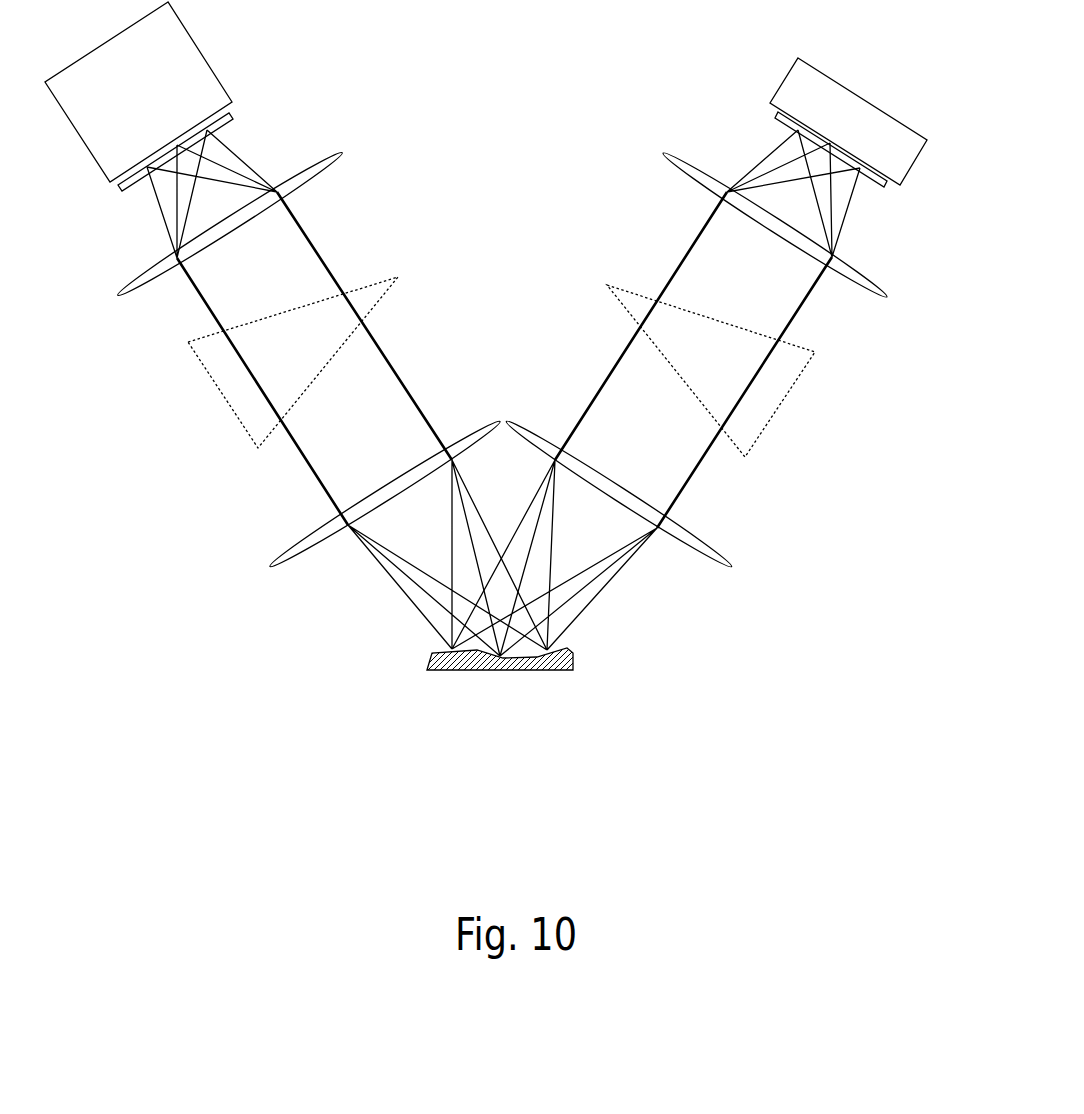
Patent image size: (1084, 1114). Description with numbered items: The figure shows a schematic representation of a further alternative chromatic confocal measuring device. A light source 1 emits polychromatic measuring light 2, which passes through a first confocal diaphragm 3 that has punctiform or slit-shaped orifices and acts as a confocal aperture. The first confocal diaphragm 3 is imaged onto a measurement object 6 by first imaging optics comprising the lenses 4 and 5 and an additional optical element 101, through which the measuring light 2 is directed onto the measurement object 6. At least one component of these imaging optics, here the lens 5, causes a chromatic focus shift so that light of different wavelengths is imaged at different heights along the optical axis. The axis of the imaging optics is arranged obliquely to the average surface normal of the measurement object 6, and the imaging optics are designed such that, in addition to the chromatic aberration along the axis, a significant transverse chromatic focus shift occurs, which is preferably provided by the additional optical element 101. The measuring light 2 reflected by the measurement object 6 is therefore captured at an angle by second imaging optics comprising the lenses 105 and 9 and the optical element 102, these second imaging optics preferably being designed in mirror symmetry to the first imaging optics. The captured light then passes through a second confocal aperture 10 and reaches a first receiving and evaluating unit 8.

The light source 1 is at (138, 92).
The measuring light 2 is at (230, 140).
The first confocal diaphragm 3 is at (119, 189).
The lens 4 is at (124, 293).
The lens 5 is at (272, 566).
The measurement object 6 is at (577, 665).
The first receiving and evaluating unit 8 is at (920, 163).
The lens 9 is at (883, 290).
The second confocal aperture 10 is at (778, 118).
The additional optical element 101 is at (383, 282).
The optical element 102 is at (798, 380).
The lens 105 is at (717, 550).